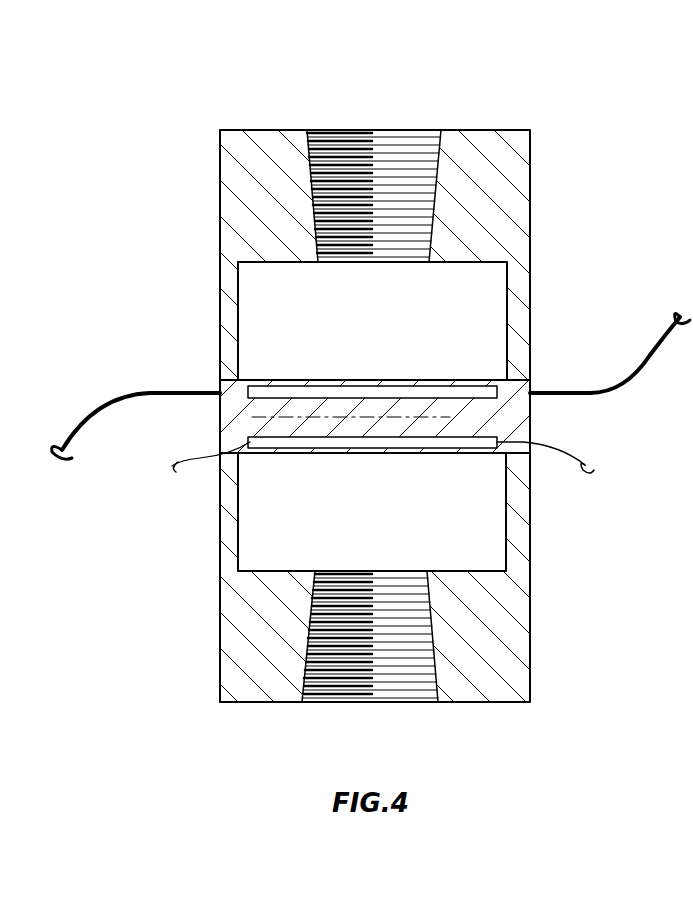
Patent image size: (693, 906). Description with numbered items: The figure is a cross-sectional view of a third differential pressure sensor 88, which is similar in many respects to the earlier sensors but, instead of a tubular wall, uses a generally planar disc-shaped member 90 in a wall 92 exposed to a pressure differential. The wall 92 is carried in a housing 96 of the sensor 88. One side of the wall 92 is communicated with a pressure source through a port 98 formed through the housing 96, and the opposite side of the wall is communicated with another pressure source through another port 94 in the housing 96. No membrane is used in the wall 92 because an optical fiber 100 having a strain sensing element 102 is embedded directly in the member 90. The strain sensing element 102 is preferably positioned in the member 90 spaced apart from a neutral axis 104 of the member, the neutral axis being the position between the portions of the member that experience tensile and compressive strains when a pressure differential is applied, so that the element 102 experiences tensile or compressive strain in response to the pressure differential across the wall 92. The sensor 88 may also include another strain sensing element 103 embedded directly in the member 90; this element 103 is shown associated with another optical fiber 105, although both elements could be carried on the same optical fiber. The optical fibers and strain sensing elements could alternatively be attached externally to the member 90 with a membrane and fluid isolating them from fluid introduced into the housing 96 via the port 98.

The differential pressure sensor 88 is at (580, 123).
The disc-shaped member 90 is at (512, 418).
The wall 92 is at (259, 458).
The port 94 is at (437, 163).
The housing 96 is at (218, 308).
The port 98 is at (432, 670).
The optical fiber 100 is at (118, 392).
The strain sensing element 102 is at (352, 398).
The strain sensing element 103 is at (337, 448).
The neutral axis 104 is at (262, 418).
The optical fiber 105 is at (570, 453).